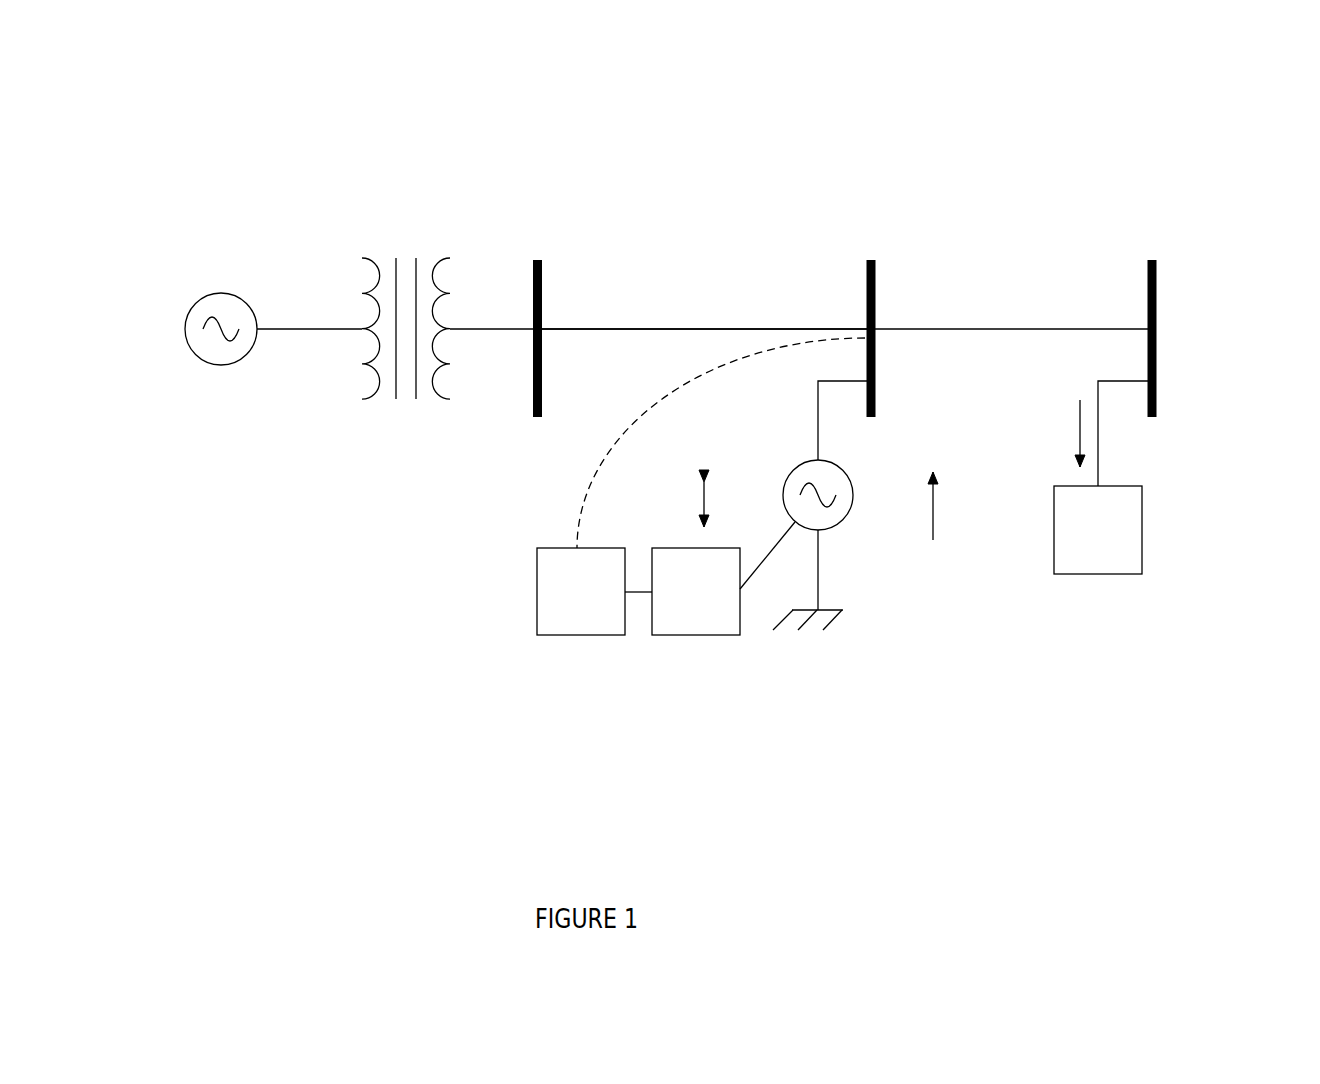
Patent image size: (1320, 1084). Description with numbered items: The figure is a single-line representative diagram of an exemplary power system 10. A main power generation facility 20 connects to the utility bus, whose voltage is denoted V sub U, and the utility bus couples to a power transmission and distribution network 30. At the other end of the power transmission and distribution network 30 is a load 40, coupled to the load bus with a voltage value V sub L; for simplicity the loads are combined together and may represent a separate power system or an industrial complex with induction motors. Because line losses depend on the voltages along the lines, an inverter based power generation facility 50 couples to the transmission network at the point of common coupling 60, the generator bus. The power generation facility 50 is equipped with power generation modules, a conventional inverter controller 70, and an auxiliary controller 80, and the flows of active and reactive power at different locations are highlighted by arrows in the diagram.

The system 10 is at (397, 168).
The main power generation facility 20 is at (208, 298).
The power transmission and distribution network 30 is at (725, 327).
The load 40 is at (1140, 543).
The inverter based power generation facility 50 is at (855, 563).
The point of common coupling 60 is at (880, 323).
The conventional inverter controller 70 is at (678, 640).
The auxiliary controller 80 is at (538, 636).